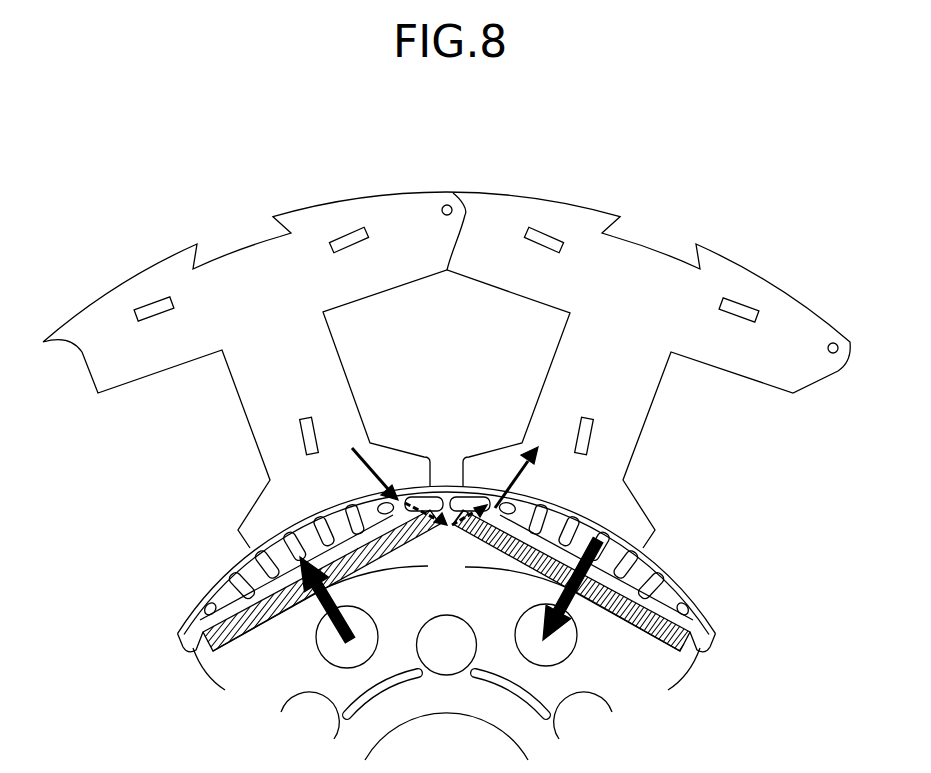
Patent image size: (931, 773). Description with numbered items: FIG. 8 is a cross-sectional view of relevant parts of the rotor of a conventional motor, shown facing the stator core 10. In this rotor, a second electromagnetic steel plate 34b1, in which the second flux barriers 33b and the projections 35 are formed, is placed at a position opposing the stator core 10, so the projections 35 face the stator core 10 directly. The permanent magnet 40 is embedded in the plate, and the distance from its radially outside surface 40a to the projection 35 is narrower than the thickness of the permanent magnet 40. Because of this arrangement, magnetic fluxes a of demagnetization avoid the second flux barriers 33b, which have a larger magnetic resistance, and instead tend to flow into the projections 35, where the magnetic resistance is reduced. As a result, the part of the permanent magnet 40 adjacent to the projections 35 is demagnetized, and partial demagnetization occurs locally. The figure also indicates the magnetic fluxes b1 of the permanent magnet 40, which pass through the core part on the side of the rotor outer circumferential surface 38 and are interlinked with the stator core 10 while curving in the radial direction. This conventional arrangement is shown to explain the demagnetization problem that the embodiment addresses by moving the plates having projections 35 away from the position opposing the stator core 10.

The stator core 10 is at (493, 218).
The rotor outer circumferential surface 38 is at (662, 553).
The second flux barrier 33b is at (422, 498).
The second electromagnetic steel plate 34b1 is at (172, 648).
The permanent magnet 40 is at (660, 617).
The radially outside surface of the permanent magnet 40a is at (243, 575).
The magnetic fluxes of the permanent magnet b1 is at (428, 566).
The projection 35 is at (446, 492).
The magnetic fluxes of demagnetization a is at (372, 464).